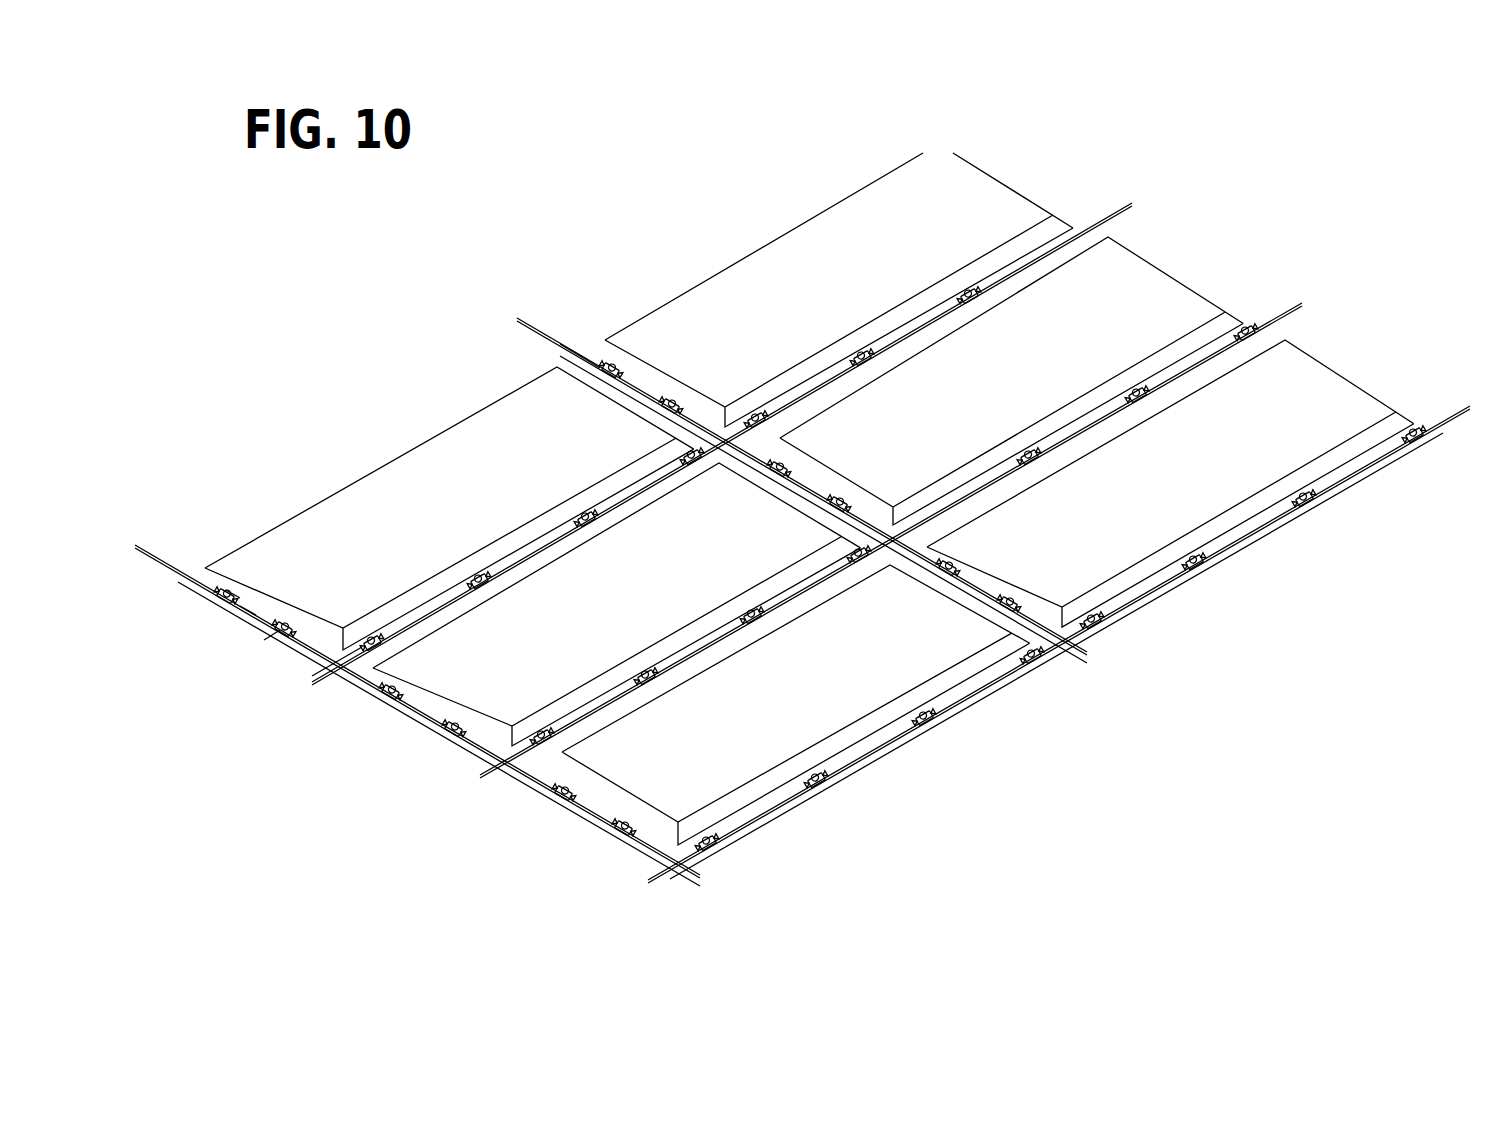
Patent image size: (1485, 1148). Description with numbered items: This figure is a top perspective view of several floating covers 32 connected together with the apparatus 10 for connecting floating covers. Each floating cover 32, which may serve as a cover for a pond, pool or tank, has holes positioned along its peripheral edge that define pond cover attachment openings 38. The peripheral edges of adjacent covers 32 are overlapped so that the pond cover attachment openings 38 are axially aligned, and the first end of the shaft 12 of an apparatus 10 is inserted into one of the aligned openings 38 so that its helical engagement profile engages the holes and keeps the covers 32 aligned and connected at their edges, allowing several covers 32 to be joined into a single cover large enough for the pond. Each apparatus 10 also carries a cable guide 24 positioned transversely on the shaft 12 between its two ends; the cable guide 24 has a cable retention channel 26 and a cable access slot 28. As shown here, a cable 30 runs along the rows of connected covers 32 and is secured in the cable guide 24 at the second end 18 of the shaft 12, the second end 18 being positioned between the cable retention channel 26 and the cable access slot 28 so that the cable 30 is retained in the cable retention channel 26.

The apparatus 10 is at (396, 704).
The shaft 12 is at (825, 775).
The second end 18 is at (223, 607).
The cable guide 24 is at (272, 636).
The cable retention channel 26 is at (234, 590).
The cable access slot 28 is at (248, 612).
The cable 30 is at (143, 547).
The floating covers 32 is at (827, 275).
The pond cover attachment openings 38 is at (590, 350).